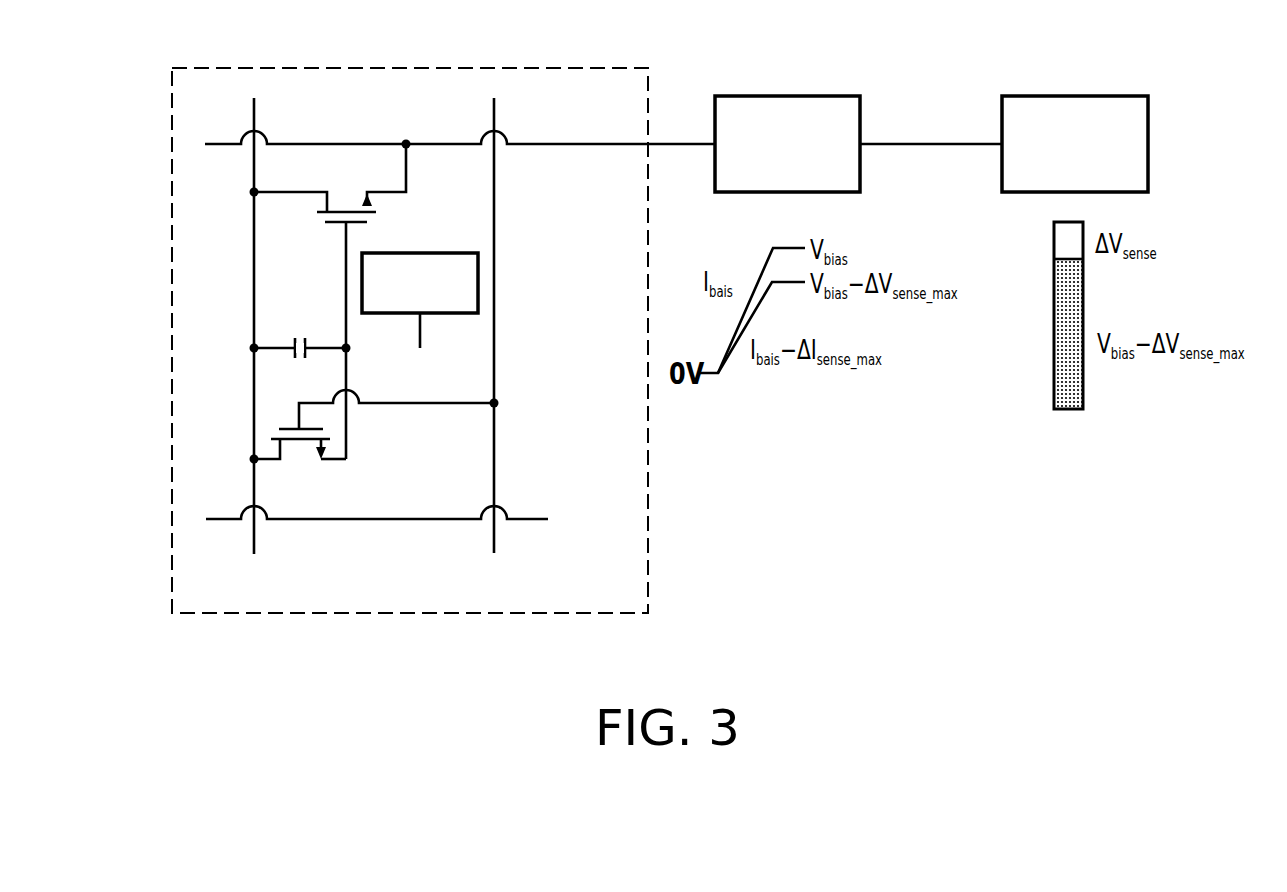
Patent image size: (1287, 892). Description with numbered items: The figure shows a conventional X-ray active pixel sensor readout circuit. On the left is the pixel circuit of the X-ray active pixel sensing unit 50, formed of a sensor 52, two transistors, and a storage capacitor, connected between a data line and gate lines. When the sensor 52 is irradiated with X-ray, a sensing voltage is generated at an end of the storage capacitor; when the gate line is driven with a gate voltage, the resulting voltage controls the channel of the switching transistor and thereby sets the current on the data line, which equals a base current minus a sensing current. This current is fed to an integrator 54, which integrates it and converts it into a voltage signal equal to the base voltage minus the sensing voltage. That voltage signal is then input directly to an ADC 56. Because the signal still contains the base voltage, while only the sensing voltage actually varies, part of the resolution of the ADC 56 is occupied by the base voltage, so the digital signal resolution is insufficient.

The X-ray active pixel sensing unit 50 is at (428, 68).
The sensor 52 is at (428, 252).
The integrator 54 is at (780, 96).
The ADC 56 is at (1068, 96).